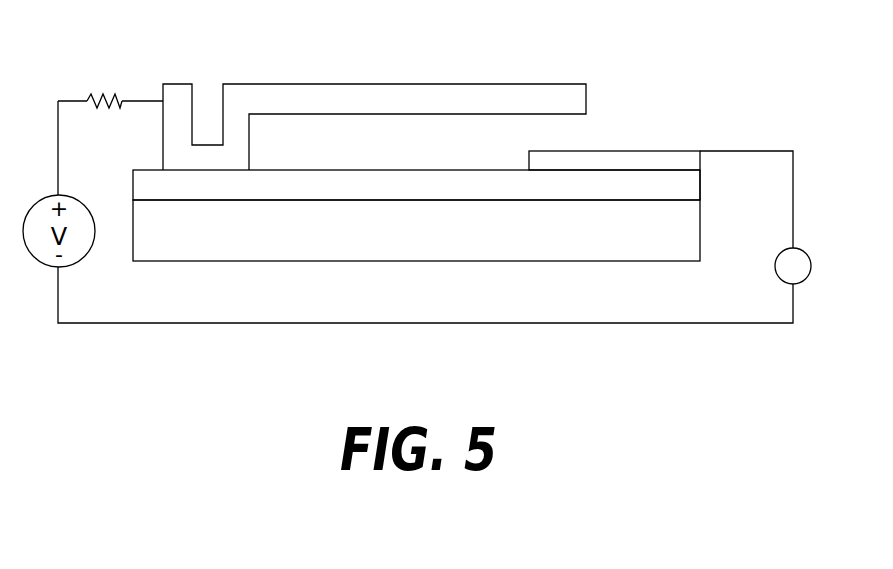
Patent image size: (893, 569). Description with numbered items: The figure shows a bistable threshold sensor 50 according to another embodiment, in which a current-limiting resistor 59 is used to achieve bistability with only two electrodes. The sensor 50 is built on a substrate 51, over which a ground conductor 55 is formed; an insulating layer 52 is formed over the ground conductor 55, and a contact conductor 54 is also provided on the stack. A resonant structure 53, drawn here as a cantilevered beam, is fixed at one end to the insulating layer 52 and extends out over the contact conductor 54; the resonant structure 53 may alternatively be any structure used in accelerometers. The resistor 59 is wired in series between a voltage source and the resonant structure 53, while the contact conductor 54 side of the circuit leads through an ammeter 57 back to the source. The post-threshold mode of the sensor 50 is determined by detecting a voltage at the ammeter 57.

The sensor 50 is at (355, 58).
The substrate 51 is at (132, 240).
The insulating layer 52 is at (360, 170).
The resonant structure 53 is at (518, 84).
The contact conductor 54 is at (620, 151).
The ground conductor 55 is at (700, 190).
The ammeter 57 is at (800, 283).
The current-limiting resistor 59 is at (112, 93).